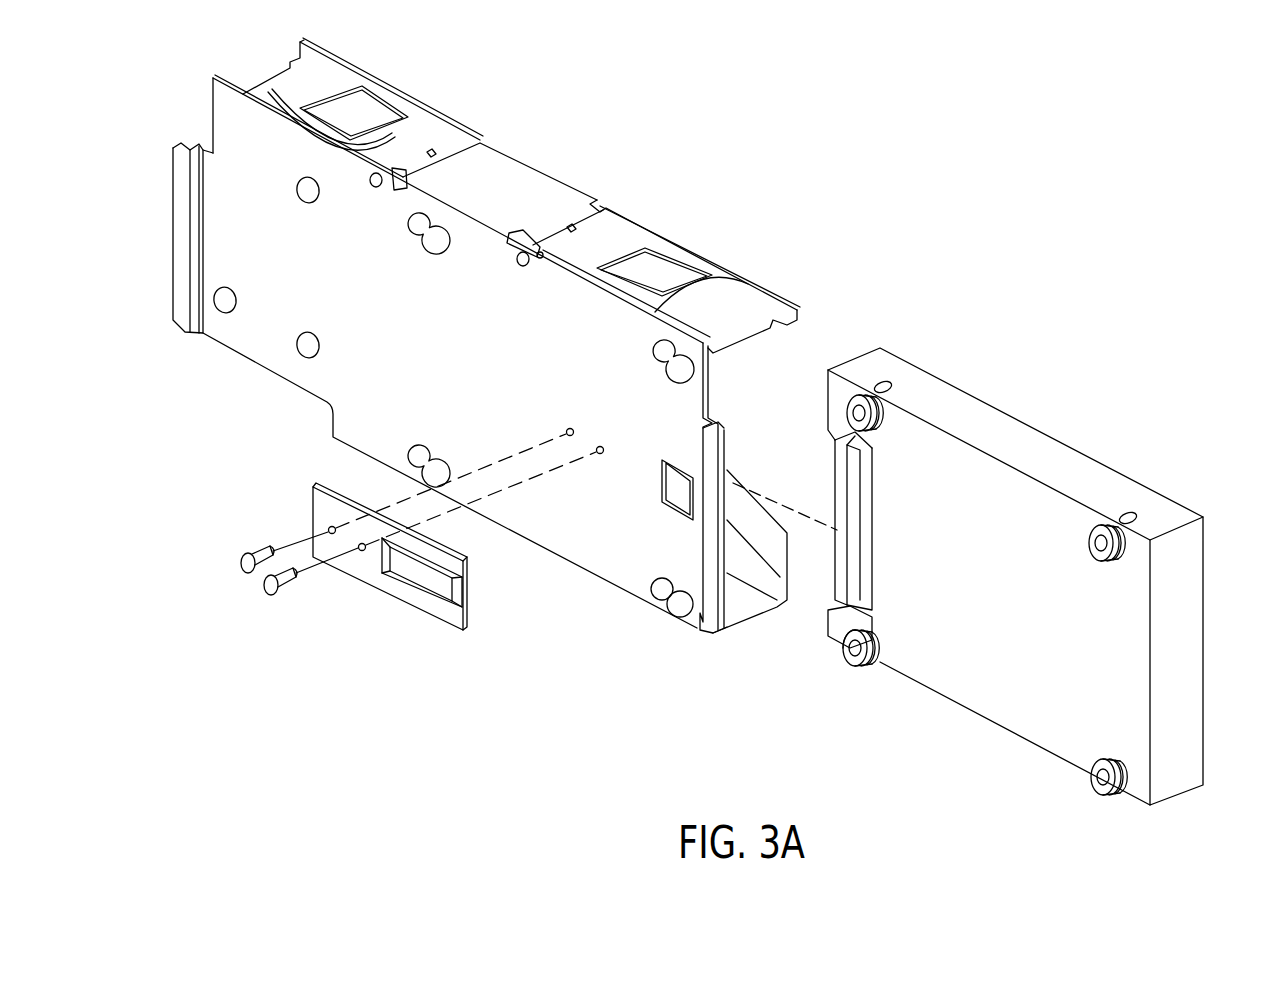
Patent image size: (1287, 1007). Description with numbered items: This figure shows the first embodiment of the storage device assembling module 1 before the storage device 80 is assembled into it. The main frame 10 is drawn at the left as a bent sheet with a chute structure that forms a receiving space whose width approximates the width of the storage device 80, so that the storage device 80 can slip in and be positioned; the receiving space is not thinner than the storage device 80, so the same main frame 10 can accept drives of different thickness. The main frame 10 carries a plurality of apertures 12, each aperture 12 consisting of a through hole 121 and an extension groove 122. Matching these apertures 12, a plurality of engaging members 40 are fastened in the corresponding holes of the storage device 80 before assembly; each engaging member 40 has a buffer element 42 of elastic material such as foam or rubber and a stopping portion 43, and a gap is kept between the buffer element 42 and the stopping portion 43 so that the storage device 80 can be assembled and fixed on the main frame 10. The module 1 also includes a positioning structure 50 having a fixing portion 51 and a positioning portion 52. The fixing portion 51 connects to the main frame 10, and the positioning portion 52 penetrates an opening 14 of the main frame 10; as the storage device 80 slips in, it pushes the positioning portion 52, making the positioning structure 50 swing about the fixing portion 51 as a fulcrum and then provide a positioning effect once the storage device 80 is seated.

The storage device assembling module 1 is at (840, 188).
The main frame 10 is at (223, 120).
The aperture 12 is at (697, 715).
The through hole 121 is at (680, 600).
The extension groove 122 is at (667, 597).
The opening 14 is at (677, 484).
The engaging member 40 is at (915, 728).
The buffer element 42 is at (882, 665).
The stopping portion 43 is at (860, 668).
The positioning structure 50 is at (418, 648).
The fixing portion 51 is at (345, 562).
The positioning portion 52 is at (465, 590).
The storage device 80 is at (1177, 622).